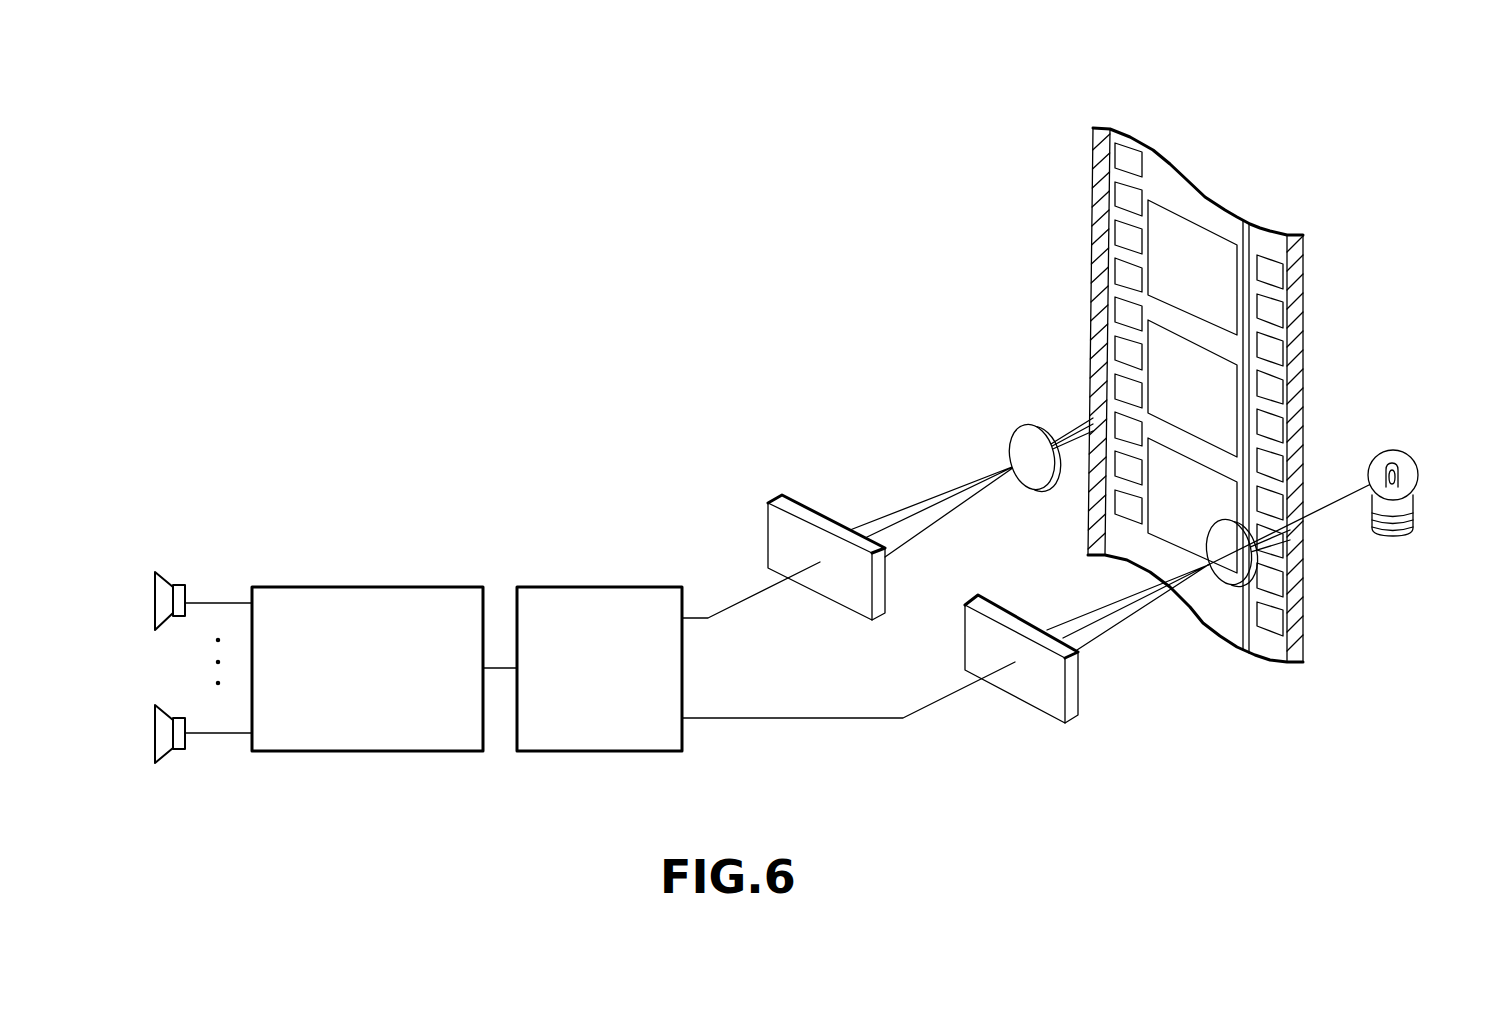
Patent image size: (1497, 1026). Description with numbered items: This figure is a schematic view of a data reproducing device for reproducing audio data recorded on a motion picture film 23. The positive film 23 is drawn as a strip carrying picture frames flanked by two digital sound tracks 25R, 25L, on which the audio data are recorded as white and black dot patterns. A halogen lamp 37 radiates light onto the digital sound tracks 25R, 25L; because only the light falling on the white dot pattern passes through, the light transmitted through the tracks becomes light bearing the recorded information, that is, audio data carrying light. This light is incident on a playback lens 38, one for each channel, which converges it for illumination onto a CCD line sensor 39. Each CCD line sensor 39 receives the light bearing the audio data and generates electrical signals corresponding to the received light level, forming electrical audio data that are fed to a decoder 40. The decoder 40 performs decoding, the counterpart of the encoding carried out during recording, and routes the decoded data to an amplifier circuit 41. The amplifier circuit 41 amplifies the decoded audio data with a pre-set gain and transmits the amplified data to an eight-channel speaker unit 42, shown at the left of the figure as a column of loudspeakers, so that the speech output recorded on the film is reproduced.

The motion picture film 23 is at (1310, 368).
The digital sound track 25L is at (1085, 147).
The digital sound track 25R is at (1307, 253).
The halogen lamp 37 is at (1408, 465).
The playback lens 38 is at (1025, 438).
The CCD line sensor 39 is at (807, 517).
The decoder 40 is at (577, 595).
The amplifier circuit 41 is at (345, 597).
The eight-channel speaker unit 42 is at (167, 590).